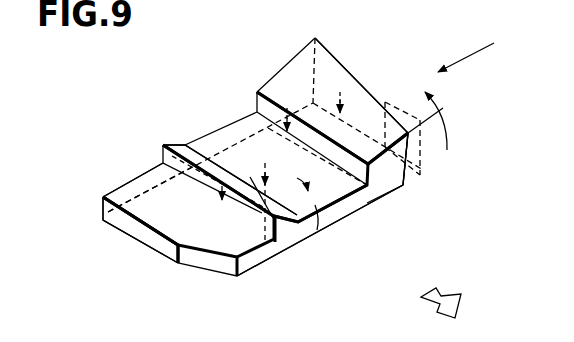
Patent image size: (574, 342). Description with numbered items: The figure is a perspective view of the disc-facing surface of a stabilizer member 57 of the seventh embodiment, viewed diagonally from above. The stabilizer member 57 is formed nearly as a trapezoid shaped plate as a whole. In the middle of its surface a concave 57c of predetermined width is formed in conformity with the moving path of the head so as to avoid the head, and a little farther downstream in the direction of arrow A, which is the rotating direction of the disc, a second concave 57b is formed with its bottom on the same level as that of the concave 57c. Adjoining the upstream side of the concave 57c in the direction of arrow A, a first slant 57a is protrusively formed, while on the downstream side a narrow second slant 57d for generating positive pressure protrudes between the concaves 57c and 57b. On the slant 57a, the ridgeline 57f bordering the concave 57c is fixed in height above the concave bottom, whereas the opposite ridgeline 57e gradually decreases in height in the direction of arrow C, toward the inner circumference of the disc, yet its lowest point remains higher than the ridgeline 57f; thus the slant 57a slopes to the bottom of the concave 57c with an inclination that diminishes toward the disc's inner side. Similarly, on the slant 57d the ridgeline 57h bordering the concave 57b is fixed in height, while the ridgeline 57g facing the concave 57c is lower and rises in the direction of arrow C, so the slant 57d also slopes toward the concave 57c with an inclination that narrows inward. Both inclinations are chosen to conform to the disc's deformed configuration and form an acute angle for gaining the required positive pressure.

The stabilizer member 57 is at (166, 106).
The first slant 57a is at (291, 62).
The second concave 57b is at (130, 185).
The concave 57c is at (360, 194).
The second slant 57d is at (170, 144).
The ridgeline 57e is at (373, 91).
The ridgeline 57f is at (385, 187).
The ridgeline 57g is at (222, 160).
The ridgeline 57h is at (166, 243).
The rotating direction of the disc A is at (466, 60).
The inner circumference direction of the disc C is at (447, 310).